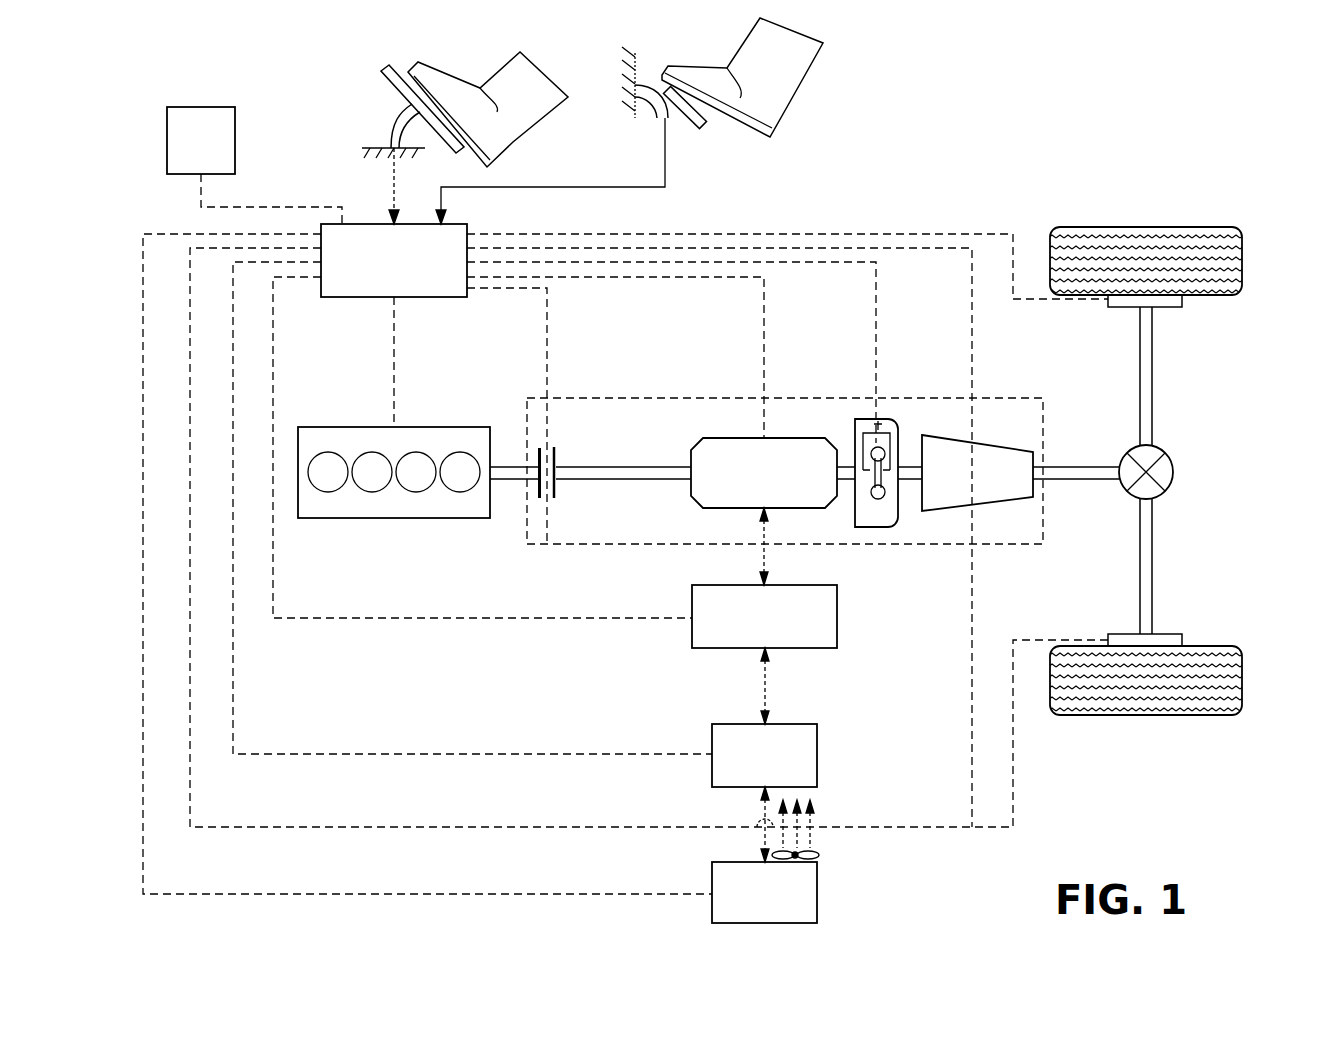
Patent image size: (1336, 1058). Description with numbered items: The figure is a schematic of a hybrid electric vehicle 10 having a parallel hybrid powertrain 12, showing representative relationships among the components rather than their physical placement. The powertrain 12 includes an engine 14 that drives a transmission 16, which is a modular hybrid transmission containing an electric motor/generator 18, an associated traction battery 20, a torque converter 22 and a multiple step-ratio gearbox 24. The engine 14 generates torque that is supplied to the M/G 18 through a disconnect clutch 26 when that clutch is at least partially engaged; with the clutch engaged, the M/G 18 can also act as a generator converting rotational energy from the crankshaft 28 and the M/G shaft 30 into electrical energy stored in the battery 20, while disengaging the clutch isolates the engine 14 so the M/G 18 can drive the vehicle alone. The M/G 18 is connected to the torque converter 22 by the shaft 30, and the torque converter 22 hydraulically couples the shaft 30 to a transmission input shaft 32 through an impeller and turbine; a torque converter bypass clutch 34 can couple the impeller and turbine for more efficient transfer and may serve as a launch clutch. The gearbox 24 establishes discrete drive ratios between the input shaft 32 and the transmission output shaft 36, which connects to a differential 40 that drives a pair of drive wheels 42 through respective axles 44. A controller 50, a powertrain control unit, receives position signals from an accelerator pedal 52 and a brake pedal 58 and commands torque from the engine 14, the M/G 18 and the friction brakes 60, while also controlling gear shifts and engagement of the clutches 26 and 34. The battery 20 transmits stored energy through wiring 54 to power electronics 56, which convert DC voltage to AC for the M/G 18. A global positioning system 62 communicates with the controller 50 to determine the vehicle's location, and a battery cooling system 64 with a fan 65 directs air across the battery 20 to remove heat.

The hybrid electric vehicle 10 is at (1014, 56).
The powertrain 12 is at (535, 669).
The engine 14 is at (345, 427).
The transmission 16 is at (840, 398).
The electric motor/generator 18 is at (738, 438).
The traction battery 20 is at (818, 750).
The torque converter 22 is at (875, 527).
The gearbox 24 is at (975, 500).
The disconnect clutch 26 is at (555, 462).
The crankshaft 28 is at (523, 466).
The M/G shaft 30 is at (633, 466).
The transmission input shaft 32 is at (921, 440).
The torque converter bypass clutch 34 is at (878, 421).
The transmission output shaft 36 is at (1088, 466).
The differential 40 is at (1174, 472).
The drive wheels 42 is at (1145, 227).
The axles 44 is at (1153, 372).
The controller 50 is at (345, 224).
The accelerator pedal 52 is at (400, 100).
The wiring 54 is at (766, 693).
The power electronics 56 is at (837, 617).
The brake pedal 58 is at (704, 127).
The friction brakes 60 is at (1183, 300).
The global positioning system 62 is at (200, 107).
The battery cooling system 64 is at (818, 893).
The fan 65 is at (815, 855).